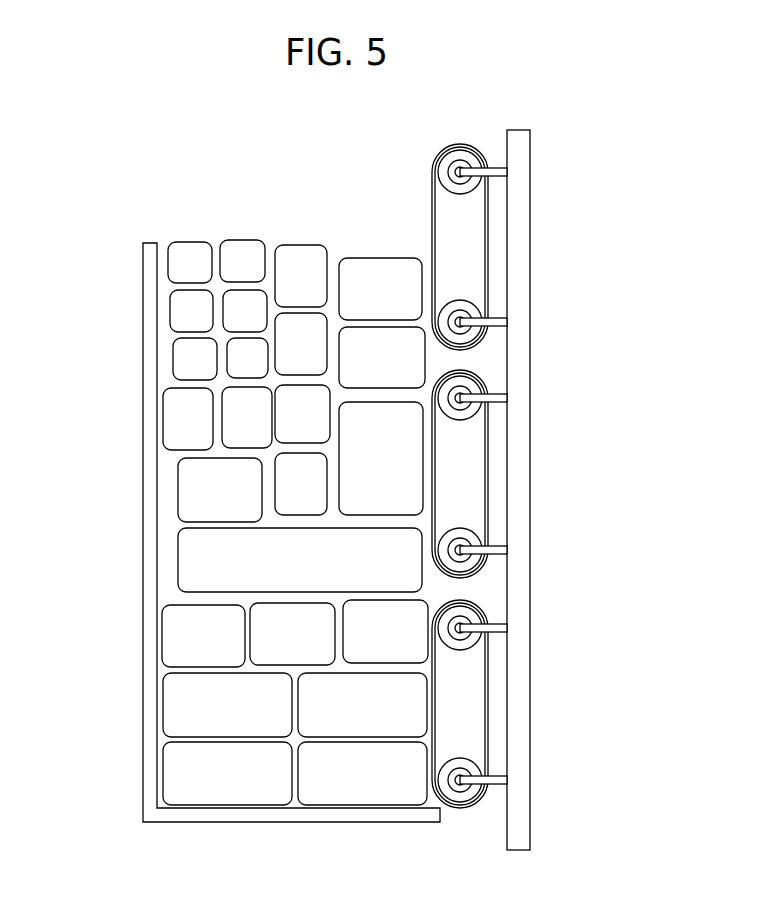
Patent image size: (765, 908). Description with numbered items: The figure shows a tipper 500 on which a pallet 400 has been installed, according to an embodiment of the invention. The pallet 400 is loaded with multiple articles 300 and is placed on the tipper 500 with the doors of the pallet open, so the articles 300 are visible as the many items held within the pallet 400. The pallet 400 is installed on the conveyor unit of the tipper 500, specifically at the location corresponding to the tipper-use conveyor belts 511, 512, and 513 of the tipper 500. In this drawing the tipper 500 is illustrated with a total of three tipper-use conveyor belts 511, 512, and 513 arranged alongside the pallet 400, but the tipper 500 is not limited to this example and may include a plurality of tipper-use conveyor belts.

The articles 300 is at (295, 220).
The pallet 400 is at (147, 303).
The tipper 500 is at (523, 160).
The tipper-use conveyor belt 511 is at (492, 246).
The tipper-use conveyor belt 512 is at (492, 473).
The tipper-use conveyor belt 513 is at (490, 702).